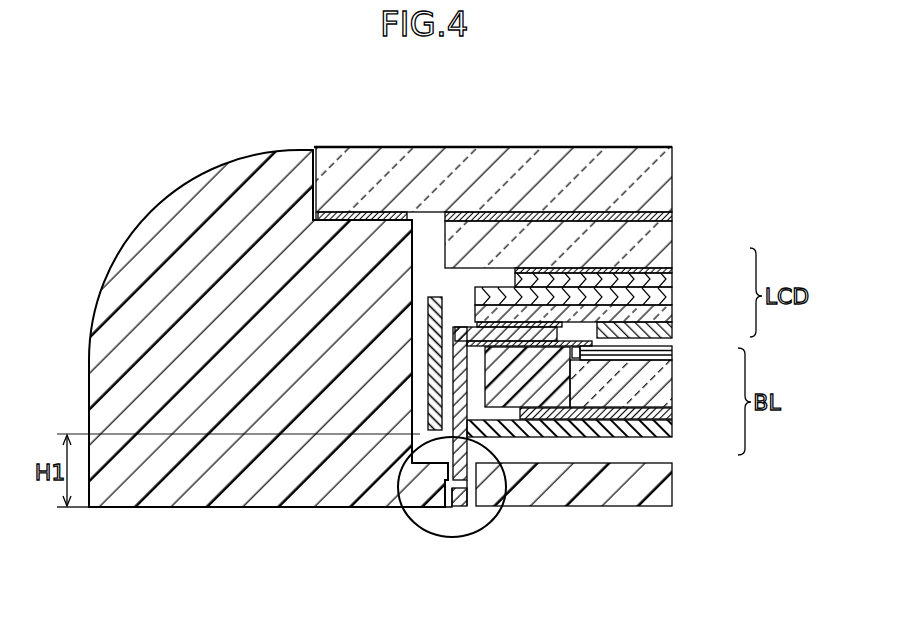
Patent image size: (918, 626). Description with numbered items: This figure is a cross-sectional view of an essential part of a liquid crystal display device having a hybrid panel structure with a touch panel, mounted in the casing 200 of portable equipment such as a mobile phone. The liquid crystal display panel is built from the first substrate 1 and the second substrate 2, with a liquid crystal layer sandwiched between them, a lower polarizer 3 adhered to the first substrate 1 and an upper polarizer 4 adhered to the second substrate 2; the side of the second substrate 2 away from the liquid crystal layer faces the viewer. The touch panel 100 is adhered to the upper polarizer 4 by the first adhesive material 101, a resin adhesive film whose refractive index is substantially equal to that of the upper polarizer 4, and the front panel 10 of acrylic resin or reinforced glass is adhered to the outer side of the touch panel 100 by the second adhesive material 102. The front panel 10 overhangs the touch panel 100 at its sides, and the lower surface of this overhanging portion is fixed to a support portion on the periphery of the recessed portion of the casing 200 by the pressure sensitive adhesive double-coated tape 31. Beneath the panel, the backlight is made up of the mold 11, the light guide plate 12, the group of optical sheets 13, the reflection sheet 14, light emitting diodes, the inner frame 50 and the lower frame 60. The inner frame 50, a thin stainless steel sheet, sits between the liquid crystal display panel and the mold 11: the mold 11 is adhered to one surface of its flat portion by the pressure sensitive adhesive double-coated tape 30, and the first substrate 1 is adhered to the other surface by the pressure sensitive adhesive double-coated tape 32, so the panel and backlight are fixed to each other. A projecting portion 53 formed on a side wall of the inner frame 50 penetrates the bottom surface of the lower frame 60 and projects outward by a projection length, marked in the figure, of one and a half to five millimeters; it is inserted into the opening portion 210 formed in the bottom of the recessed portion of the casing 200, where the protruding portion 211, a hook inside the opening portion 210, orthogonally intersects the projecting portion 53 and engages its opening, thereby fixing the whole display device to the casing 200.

The first substrate 1 is at (672, 313).
The second substrate 2 is at (672, 297).
The lower polarizer 3 is at (672, 333).
The upper polarizer 4 is at (673, 279).
The front panel 10 is at (530, 166).
The mold 11 is at (560, 383).
The light guide plate 12 is at (673, 379).
The group of optical sheets 13 is at (678, 347).
The reflection sheet 14 is at (580, 412).
The pressure sensitive adhesive double-coated tape 30 is at (533, 344).
The pressure sensitive adhesive double-coated tape 31 is at (350, 215).
The pressure sensitive adhesive double-coated tape 32 is at (503, 323).
The inner frame 50 is at (458, 408).
The projecting portion 53 is at (508, 510).
The lower frame 60 is at (668, 433).
The touch panel 100 is at (655, 237).
The first adhesive material 101 is at (630, 270).
The second adhesive material 102 is at (488, 212).
The casing 200 is at (220, 223).
The opening portion 210 is at (472, 508).
The protruding portion 211 is at (452, 487).